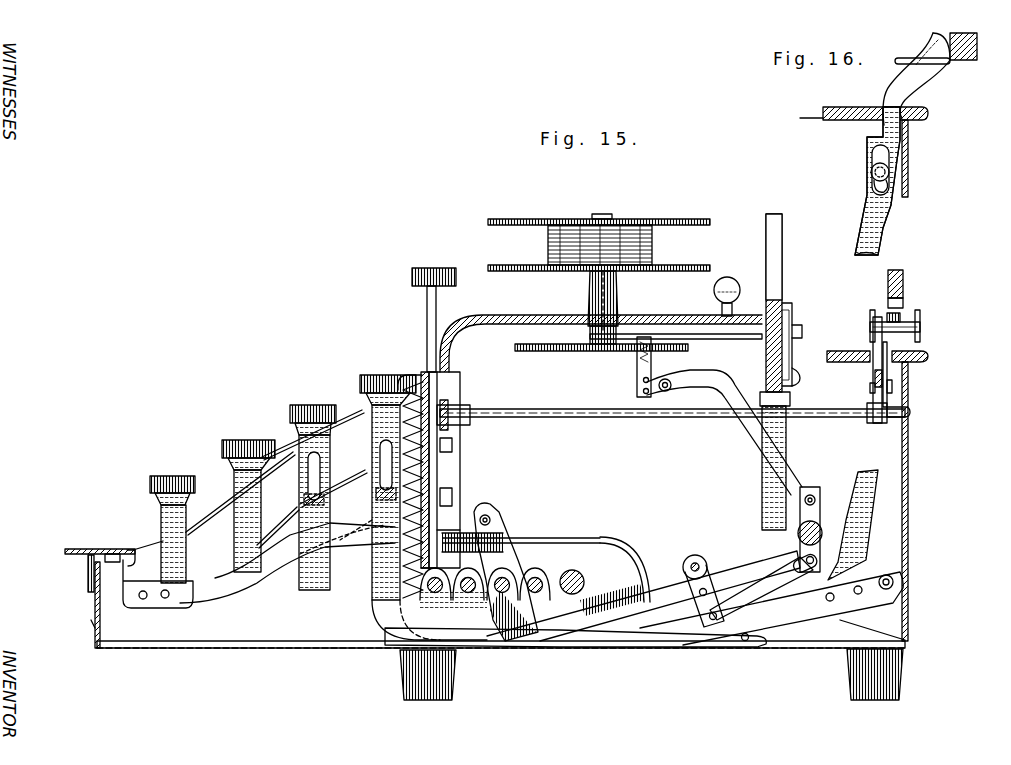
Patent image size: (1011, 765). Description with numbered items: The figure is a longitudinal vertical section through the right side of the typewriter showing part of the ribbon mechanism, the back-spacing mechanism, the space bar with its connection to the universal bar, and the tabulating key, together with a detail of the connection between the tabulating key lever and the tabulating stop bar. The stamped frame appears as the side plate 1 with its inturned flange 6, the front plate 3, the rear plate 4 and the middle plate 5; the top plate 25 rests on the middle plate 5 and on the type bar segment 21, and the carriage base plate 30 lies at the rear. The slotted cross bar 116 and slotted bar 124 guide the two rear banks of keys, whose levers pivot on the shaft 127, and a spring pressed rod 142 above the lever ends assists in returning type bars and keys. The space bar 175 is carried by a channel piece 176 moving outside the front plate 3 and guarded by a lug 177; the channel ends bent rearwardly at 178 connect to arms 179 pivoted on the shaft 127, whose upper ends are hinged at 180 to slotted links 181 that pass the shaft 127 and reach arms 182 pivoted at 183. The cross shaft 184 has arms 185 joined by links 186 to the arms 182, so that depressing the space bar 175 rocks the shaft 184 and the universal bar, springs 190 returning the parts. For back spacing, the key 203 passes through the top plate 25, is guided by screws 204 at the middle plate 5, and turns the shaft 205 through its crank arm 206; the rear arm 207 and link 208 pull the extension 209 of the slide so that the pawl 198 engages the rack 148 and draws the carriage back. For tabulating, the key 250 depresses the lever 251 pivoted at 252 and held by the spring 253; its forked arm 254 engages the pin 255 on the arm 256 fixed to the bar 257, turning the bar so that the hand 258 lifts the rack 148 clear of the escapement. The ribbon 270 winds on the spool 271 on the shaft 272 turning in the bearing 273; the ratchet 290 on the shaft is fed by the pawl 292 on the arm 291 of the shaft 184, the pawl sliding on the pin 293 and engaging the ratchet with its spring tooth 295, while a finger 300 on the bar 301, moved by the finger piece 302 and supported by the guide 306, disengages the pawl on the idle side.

In FIG. 15, the side plate 1 is at (334, 650).
In FIG. 15, the front plate 3 is at (95, 640).
In FIG. 15, the rear plate 4 is at (908, 490).
In FIG. 16, the rear plate 4 is at (908, 163).
In FIG. 15, the middle plate 5 is at (410, 375).
In FIG. 15, the flange 6 is at (556, 316).
In FIG. 15, the type bar segment 21 is at (783, 275).
In FIG. 15, the top plate 25 is at (512, 316).
In FIG. 15, the base plate 30 is at (920, 362).
In FIG. 16, the base plate 30 is at (832, 108).
In FIG. 15, the slotted cross bar 116 is at (385, 490).
In FIG. 15, the slotted bar 124 is at (312, 502).
In FIG. 15, the shaft 127 is at (514, 588).
In FIG. 15, the spring pressed rod 142 is at (600, 546).
In FIG. 15, the toothed rack 148 is at (905, 284).
In FIG. 15, the space bar 175 is at (82, 548).
In FIG. 15, the channel piece 176 is at (88, 582).
In FIG. 15, the lug 177 is at (137, 556).
In FIG. 15, the bent ends 178 is at (165, 600).
In FIG. 15, the arm 179 is at (278, 576).
In FIG. 15, the hinge 180 is at (486, 514).
In FIG. 15, the link 181 is at (600, 625).
In FIG. 15, the arm 182 is at (712, 560).
In FIG. 15, the pivot 183 is at (690, 556).
In FIG. 15, the shaft 184 is at (820, 533).
In FIG. 15, the arm 185 is at (792, 560).
In FIG. 15, the link 186 is at (787, 620).
In FIG. 15, the spring 190 is at (404, 382).
In FIG. 15, the pivoted pawl 198 is at (921, 328).
In FIG. 15, the key 203 is at (424, 270).
In FIG. 15, the screw 204 is at (452, 448).
In FIG. 15, the shaft 205 is at (611, 419).
In FIG. 15, the crank arm 206 is at (487, 402).
In FIG. 15, the arm 207 is at (912, 408).
In FIG. 15, the link 208 is at (898, 392).
In FIG. 15, the extension 209 is at (873, 375).
In FIG. 15, the key 250 is at (362, 380).
In FIG. 15, the lever 251 is at (668, 648).
In FIG. 15, the pivot 252 is at (900, 578).
In FIG. 15, the spring 253 is at (902, 640).
In FIG. 15, the arm 254 is at (870, 520).
In FIG. 16, the arm 254 is at (880, 217).
In FIG. 16, the pin 255 is at (870, 175).
In FIG. 16, the arm 256 is at (923, 80).
In FIG. 16, the bar 257 is at (963, 60).
In FIG. 16, the hand 258 is at (912, 58).
In FIG. 15, the ribbon 270 is at (652, 240).
In FIG. 15, the spool 271 is at (514, 219).
In FIG. 15, the shaft 272 is at (614, 216).
In FIG. 15, the bearing 273 is at (595, 290).
In FIG. 15, the ratchet wheel 290 is at (556, 352).
In FIG. 15, the arm 291 is at (812, 488).
In FIG. 15, the pawl 292 is at (722, 385).
In FIG. 15, the pin 293 is at (644, 386).
In FIG. 15, the spring tooth 295 is at (637, 360).
In FIG. 15, the finger 300 is at (690, 334).
In FIG. 15, the bar 301 is at (795, 322).
In FIG. 15, the finger piece 302 is at (740, 268).
In FIG. 15, the guide 306 is at (830, 336).